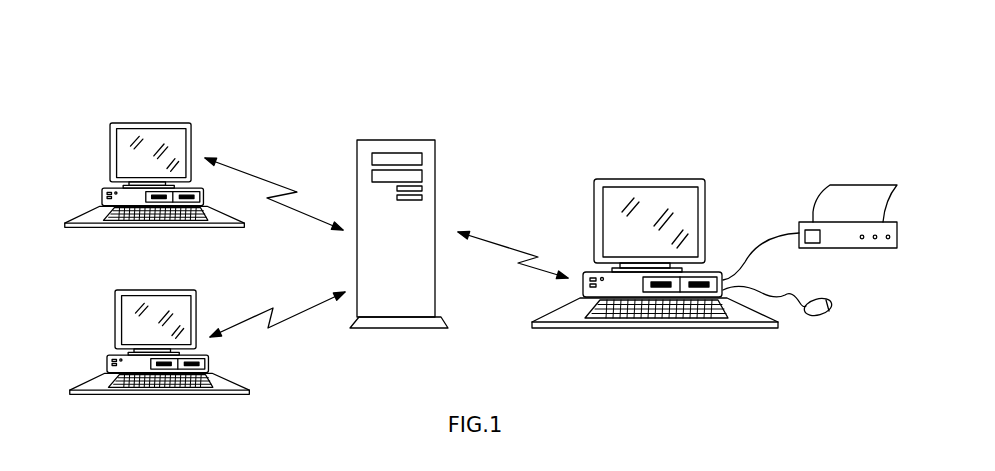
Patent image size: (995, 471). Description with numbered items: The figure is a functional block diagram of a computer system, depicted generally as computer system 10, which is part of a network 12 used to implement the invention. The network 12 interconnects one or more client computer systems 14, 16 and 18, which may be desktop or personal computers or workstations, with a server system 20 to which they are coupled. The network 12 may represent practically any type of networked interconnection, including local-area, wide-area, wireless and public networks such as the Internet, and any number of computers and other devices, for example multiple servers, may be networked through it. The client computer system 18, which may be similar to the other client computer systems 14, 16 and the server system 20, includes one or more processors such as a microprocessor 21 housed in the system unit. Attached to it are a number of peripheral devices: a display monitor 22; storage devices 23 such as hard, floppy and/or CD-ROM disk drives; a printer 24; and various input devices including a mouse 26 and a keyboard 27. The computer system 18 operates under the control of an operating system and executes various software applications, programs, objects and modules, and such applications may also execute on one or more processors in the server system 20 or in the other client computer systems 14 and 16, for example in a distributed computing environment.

The computer system 10 is at (540, 78).
The network 12 is at (300, 308).
The client computer system 14 is at (115, 305).
The client computer system 16 is at (110, 140).
The client computer system 18 is at (683, 172).
The server system 20 is at (392, 140).
The microprocessor 21 is at (583, 290).
The display monitor 22 is at (647, 178).
The storage devices 23 is at (732, 303).
The printer 24 is at (799, 226).
The mouse 26 is at (832, 305).
The keyboard 27 is at (643, 320).